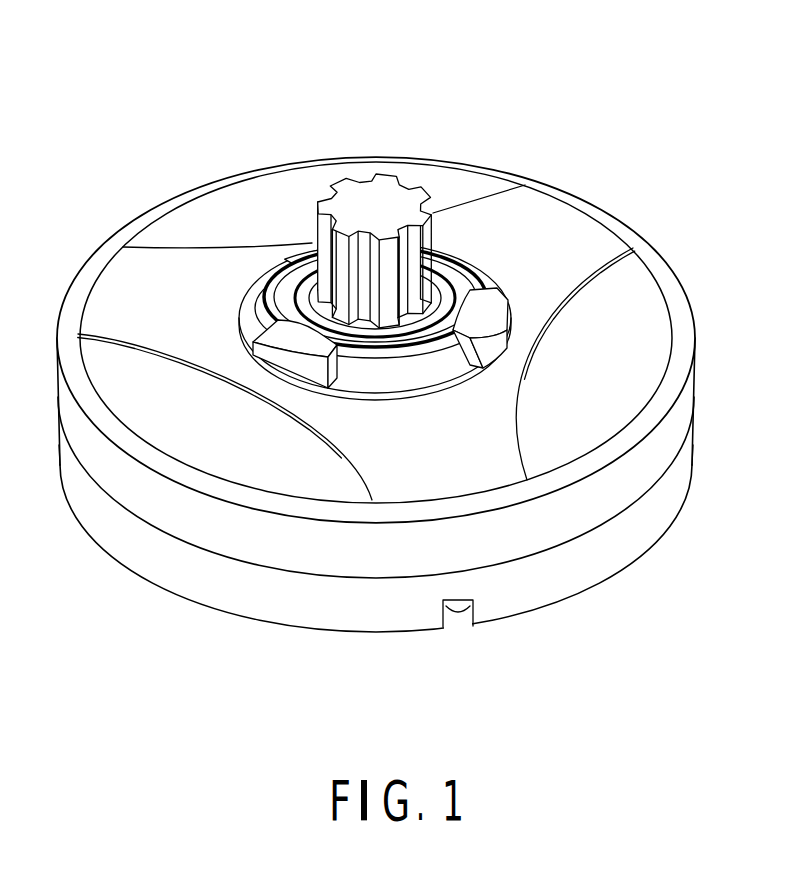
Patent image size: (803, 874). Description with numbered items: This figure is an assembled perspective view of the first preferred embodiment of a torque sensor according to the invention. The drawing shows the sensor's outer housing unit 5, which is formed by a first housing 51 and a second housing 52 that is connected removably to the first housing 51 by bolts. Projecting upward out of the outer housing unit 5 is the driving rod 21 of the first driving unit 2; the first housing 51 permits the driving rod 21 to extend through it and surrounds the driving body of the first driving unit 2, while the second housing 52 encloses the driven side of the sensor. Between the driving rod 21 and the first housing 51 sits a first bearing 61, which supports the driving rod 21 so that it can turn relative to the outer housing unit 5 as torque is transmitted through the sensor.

The rotor hub 2 is at (374, 172).
The toothed top of hub 21 is at (350, 203).
The housing 5 is at (408, 368).
The top cover with vanes 51 is at (563, 218).
The lower housing band 52 is at (652, 518).
The bearing ring 61 is at (273, 288).